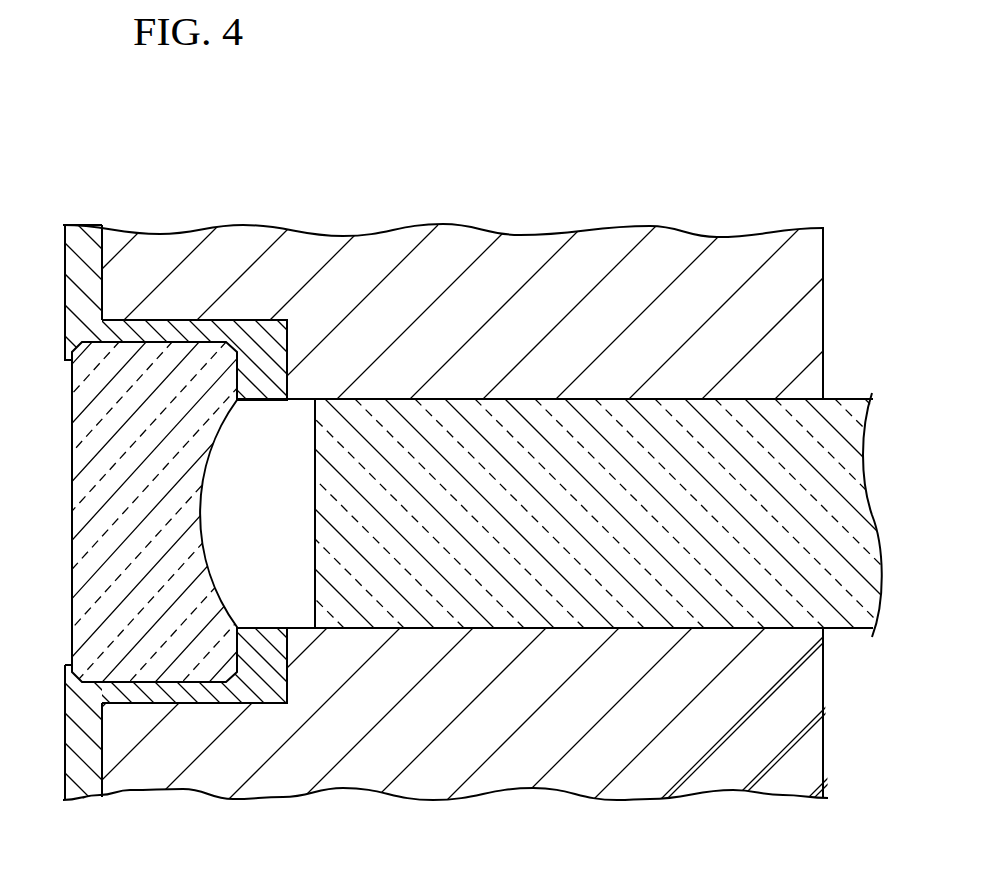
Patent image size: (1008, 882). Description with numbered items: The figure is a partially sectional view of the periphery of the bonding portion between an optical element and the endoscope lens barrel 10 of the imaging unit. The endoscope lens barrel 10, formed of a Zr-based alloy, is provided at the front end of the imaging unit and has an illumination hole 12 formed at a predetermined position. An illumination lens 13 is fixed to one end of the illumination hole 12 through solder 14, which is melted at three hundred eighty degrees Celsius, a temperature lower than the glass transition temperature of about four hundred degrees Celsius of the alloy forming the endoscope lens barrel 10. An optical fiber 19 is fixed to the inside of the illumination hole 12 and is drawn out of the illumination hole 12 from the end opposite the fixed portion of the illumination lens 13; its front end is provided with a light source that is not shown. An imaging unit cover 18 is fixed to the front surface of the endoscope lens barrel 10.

The endoscope lens barrel 10 is at (830, 305).
The illumination hole 12 is at (280, 560).
The illumination lens 13 is at (88, 482).
The solder 14 is at (255, 338).
The imaging unit cover 18 is at (85, 247).
The optical fiber 19 is at (682, 593).